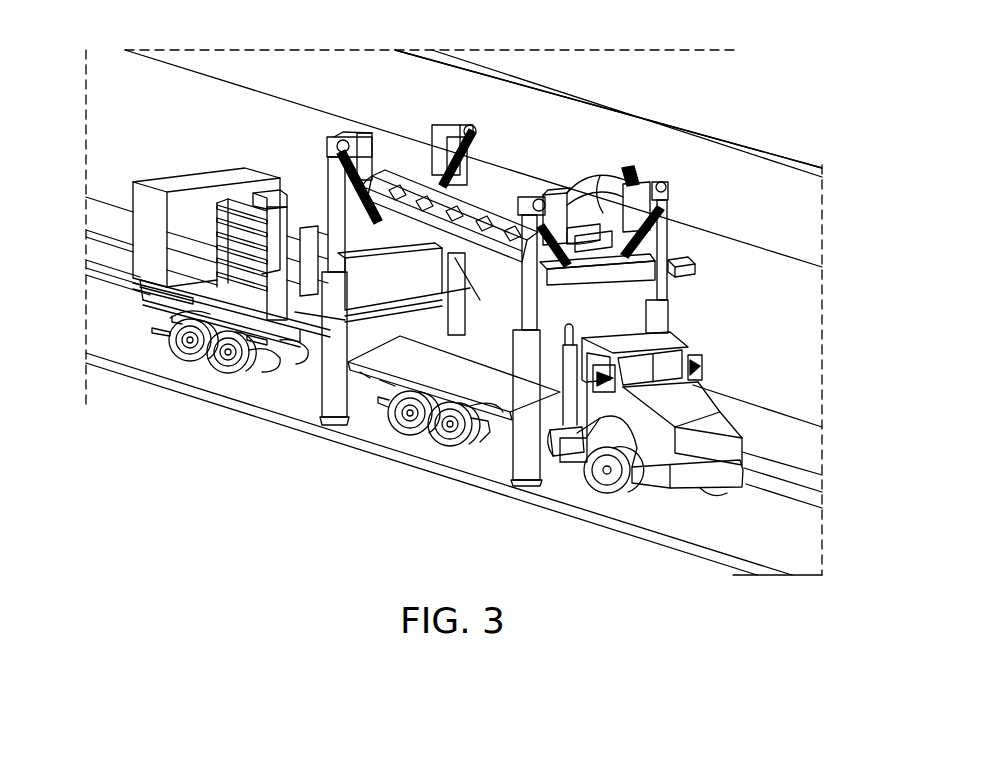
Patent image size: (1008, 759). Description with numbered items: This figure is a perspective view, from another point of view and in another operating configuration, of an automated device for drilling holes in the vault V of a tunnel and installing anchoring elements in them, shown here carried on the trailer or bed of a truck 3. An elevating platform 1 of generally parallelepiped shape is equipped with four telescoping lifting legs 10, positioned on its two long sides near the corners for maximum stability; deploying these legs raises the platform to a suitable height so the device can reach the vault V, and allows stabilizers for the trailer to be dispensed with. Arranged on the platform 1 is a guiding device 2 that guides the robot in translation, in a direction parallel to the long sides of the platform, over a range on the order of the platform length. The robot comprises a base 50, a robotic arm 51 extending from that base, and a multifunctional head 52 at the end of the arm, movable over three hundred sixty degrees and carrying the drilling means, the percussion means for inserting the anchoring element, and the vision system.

The elevating platform 1 is at (546, 288).
The guiding device 2 is at (507, 212).
The truck 3 is at (648, 500).
The telescoping lifting legs 10 is at (327, 407).
The base 50 is at (657, 216).
The robotic arm 51 is at (596, 188).
The multifunctional head 52 is at (690, 272).
The vault V is at (770, 158).